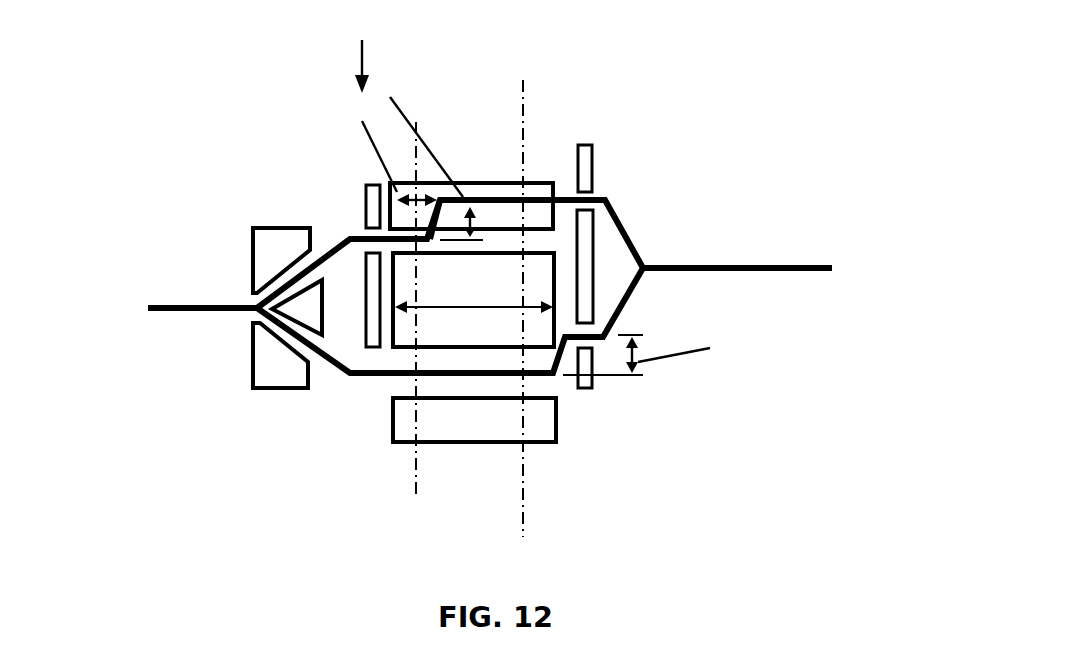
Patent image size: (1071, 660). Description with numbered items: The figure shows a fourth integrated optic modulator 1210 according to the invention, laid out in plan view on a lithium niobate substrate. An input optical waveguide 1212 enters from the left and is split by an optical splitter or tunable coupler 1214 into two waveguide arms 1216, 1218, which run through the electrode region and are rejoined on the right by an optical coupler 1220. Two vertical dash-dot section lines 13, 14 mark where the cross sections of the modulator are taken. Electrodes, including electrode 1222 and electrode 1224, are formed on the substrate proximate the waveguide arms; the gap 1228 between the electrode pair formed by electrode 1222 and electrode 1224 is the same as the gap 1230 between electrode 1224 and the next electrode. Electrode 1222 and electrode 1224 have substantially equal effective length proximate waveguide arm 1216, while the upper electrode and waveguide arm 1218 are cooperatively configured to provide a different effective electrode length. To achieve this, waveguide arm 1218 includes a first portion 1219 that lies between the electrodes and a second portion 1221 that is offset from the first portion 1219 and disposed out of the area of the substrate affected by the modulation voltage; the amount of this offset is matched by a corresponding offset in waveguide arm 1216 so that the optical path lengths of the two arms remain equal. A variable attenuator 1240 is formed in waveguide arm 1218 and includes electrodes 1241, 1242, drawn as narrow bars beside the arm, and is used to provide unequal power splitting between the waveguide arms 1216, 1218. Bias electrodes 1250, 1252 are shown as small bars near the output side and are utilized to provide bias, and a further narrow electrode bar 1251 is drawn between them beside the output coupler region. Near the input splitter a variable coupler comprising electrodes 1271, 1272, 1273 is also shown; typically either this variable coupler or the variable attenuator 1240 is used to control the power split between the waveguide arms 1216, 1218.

The integrated optic modulator 1210 is at (572, 45).
The optical waveguide 1212 is at (148, 308).
The optical splitter or tunable coupler 1214 is at (255, 307).
The waveguide arm 1216 is at (323, 250).
The waveguide arm 1218 is at (340, 360).
The first portion 1219 is at (363, 222).
The optical coupler 1220 is at (807, 270).
The second portion 1221 is at (552, 170).
The electrode 1222 is at (540, 412).
The electrode 1224 is at (505, 288).
The gap 1228 is at (380, 393).
The gap 1230 is at (568, 226).
The variable attenuator 1240 is at (383, 47).
The electrode 1241 is at (366, 305).
The electrode 1242 is at (363, 185).
The bias electrode 1250 is at (593, 387).
The right center electrode 1251 is at (593, 277).
The bias electrode 1252 is at (593, 162).
The electrode 1271 is at (268, 375).
The electrode 1272 is at (293, 308).
The electrode 1273 is at (267, 242).
The section lines 13— 13 is at (416, 497).
The section lines 14— 14 is at (523, 80).